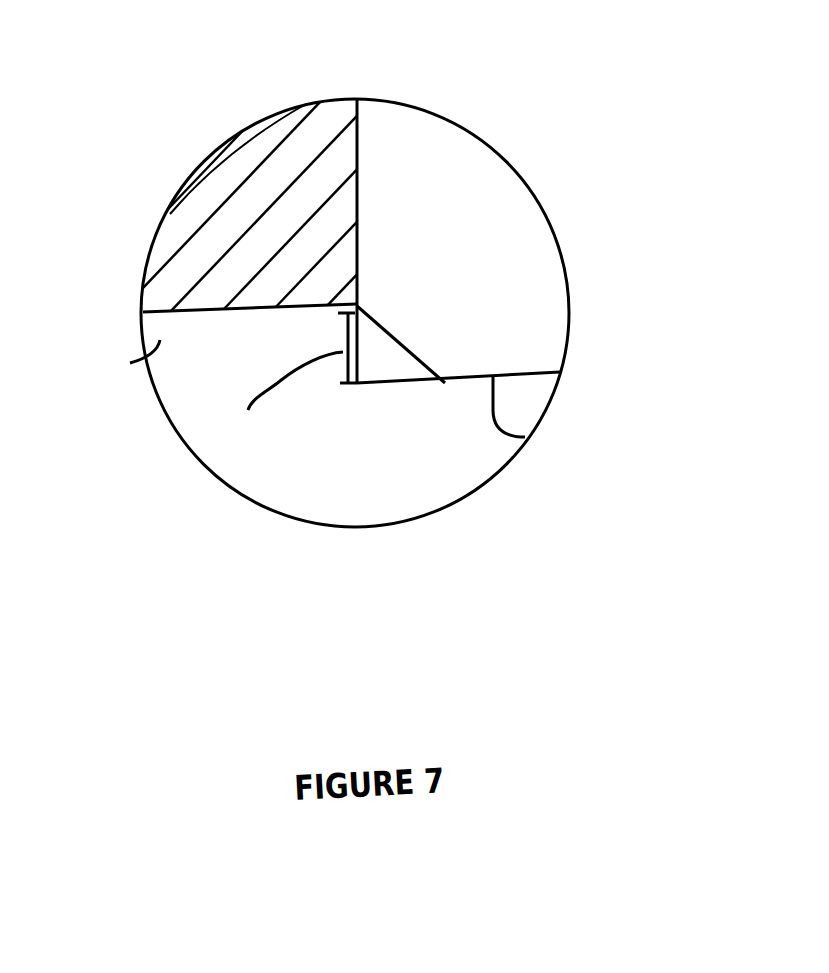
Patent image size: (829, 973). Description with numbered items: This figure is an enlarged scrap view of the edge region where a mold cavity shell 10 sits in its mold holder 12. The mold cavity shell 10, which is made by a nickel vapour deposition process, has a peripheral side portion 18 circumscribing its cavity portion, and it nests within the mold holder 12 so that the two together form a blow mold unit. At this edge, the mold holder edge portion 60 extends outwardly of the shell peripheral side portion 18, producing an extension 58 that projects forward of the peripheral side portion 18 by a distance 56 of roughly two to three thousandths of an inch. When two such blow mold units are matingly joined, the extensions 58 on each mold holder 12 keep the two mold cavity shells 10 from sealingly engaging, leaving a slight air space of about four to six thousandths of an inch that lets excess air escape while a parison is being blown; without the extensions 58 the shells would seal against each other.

The mold cavity shell 10 is at (240, 165).
The mold holder 12 is at (435, 157).
The peripheral side portion 18 is at (152, 313).
The distance 56 is at (248, 410).
The extension 58 is at (362, 352).
The mold holder edge portion 60 is at (525, 437).